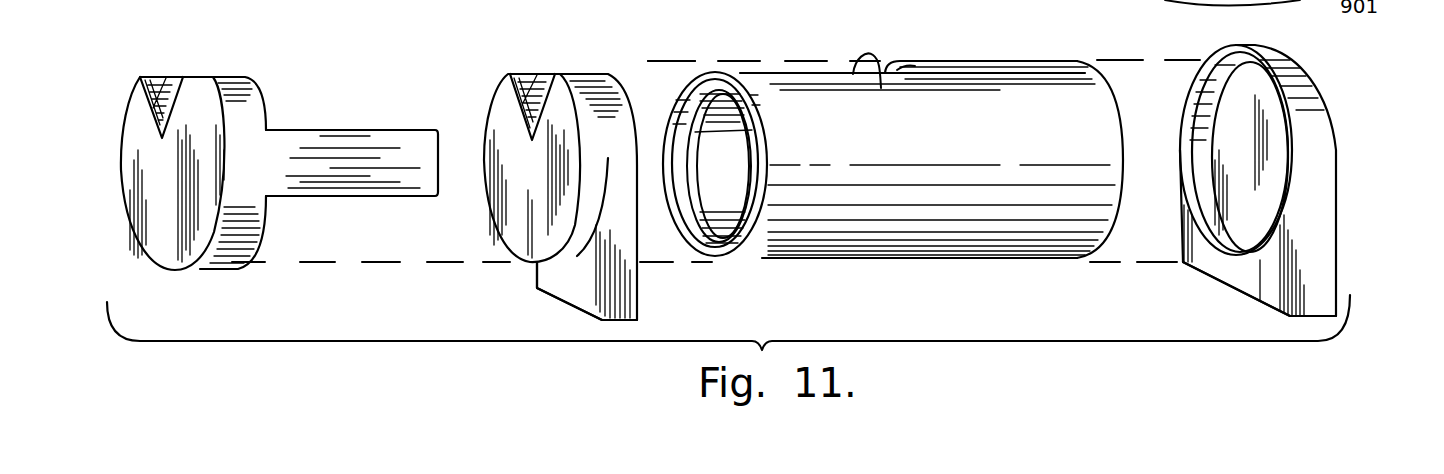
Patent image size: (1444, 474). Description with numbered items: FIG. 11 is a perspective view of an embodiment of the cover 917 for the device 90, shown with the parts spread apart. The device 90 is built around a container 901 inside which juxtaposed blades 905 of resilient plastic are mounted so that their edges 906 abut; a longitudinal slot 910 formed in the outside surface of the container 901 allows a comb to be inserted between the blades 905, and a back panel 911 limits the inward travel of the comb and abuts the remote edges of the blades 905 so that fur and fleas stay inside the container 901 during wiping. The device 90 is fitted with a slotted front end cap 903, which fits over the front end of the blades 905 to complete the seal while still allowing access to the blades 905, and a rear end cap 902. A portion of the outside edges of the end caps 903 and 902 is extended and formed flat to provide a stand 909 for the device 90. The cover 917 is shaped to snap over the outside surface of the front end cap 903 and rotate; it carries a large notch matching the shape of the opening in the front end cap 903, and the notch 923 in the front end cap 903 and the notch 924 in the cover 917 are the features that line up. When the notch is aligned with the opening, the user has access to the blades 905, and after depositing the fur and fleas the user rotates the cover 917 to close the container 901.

The device 90 is at (684, 50).
The container 901 is at (976, 60).
The rear end cap 902 is at (1323, 140).
The front end cap 903 is at (500, 105).
The blades 905 is at (752, 178).
The edges 906 is at (718, 95).
The stand 909 is at (556, 290).
The longitudinal slot 910 is at (873, 84).
The back panel 911 is at (903, 72).
The cover 917 is at (168, 270).
The notch 923 is at (530, 85).
The notch 924 is at (152, 92).